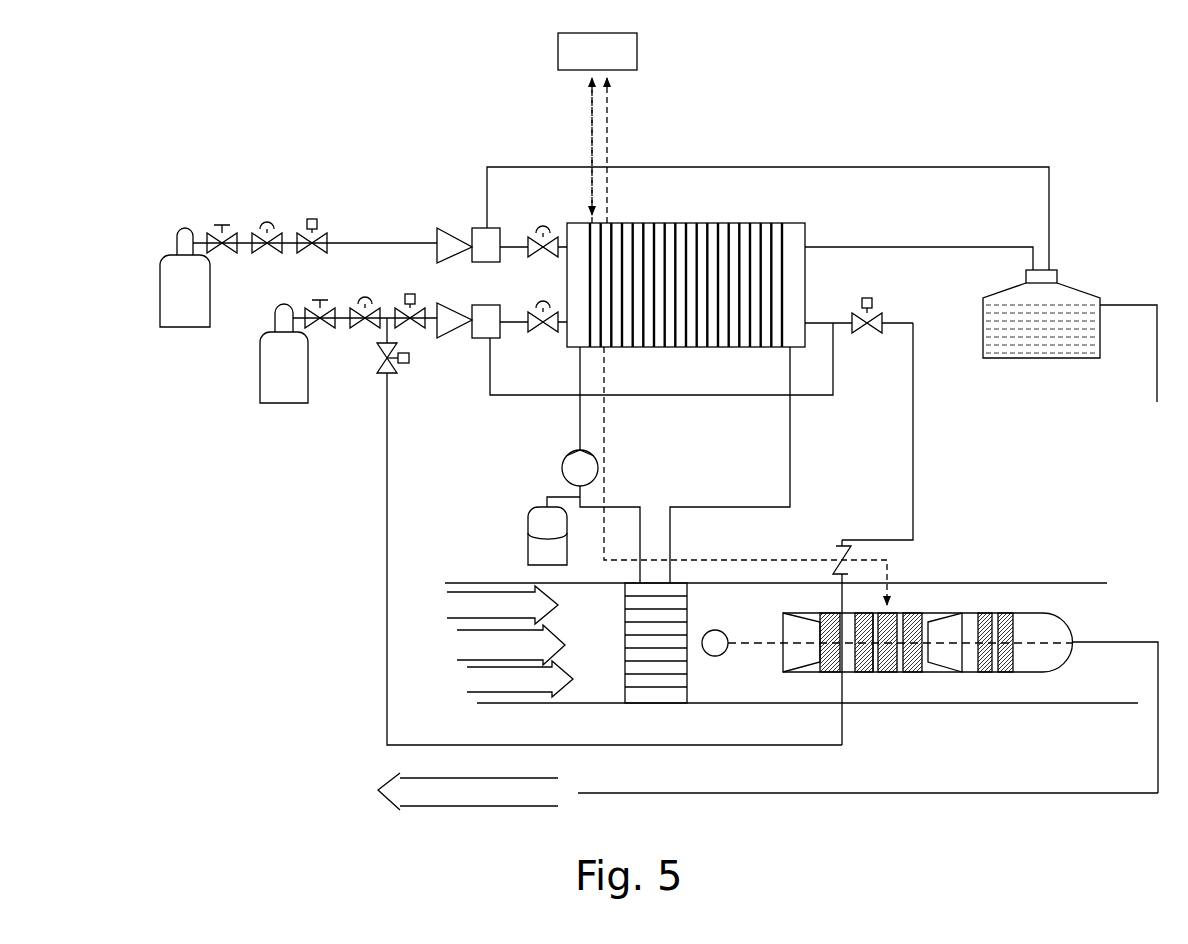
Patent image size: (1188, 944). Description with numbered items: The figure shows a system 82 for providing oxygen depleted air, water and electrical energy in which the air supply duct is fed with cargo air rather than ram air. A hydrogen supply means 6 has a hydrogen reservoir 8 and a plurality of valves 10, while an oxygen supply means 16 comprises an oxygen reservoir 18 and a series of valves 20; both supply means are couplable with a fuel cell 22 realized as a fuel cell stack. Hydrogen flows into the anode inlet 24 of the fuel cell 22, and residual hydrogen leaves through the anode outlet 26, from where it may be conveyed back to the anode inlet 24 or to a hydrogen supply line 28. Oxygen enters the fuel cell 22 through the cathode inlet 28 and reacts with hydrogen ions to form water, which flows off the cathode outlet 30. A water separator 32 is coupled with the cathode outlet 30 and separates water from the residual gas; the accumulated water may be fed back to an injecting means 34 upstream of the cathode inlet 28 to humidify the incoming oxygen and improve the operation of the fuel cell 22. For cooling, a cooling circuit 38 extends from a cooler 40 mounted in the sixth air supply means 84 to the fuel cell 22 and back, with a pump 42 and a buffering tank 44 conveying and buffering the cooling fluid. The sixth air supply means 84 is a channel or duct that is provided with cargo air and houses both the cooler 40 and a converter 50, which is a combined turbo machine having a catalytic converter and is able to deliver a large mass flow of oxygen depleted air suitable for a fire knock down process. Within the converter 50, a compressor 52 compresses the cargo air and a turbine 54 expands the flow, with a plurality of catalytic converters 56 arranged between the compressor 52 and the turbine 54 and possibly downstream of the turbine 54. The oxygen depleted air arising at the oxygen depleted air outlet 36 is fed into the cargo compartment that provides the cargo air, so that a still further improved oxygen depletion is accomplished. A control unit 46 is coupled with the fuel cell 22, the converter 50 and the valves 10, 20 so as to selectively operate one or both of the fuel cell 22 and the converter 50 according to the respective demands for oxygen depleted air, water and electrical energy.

The hydrogen supply means 6 is at (313, 455).
The hydrogen reservoir 8 is at (263, 380).
The valves 10 is at (352, 345).
The oxygen supply means 16 is at (222, 165).
The oxygen reservoir 18 is at (163, 275).
The valves 20 is at (278, 215).
The fuel cell 22 is at (740, 235).
The anode inlet 24 is at (560, 338).
The anode outlet 26 is at (815, 312).
The cathode inlet 28 is at (555, 263).
The cathode outlet 30 is at (815, 237).
The water separator 32 is at (1065, 303).
The injecting means 34 is at (385, 692).
The oxygen depleted air outlet 36 is at (1090, 630).
The cooling circuit 38 is at (805, 455).
The cooler 40 is at (680, 628).
The pump 42 is at (577, 472).
The buffering tank 44 is at (540, 552).
The control unit 46 is at (628, 53).
The converter 50 is at (1015, 605).
The compressor 52 is at (802, 657).
The turbine 54 is at (945, 627).
The catalytic converters 56 is at (862, 668).
The system 82 is at (955, 92).
The sixth air supply means 84 is at (484, 712).